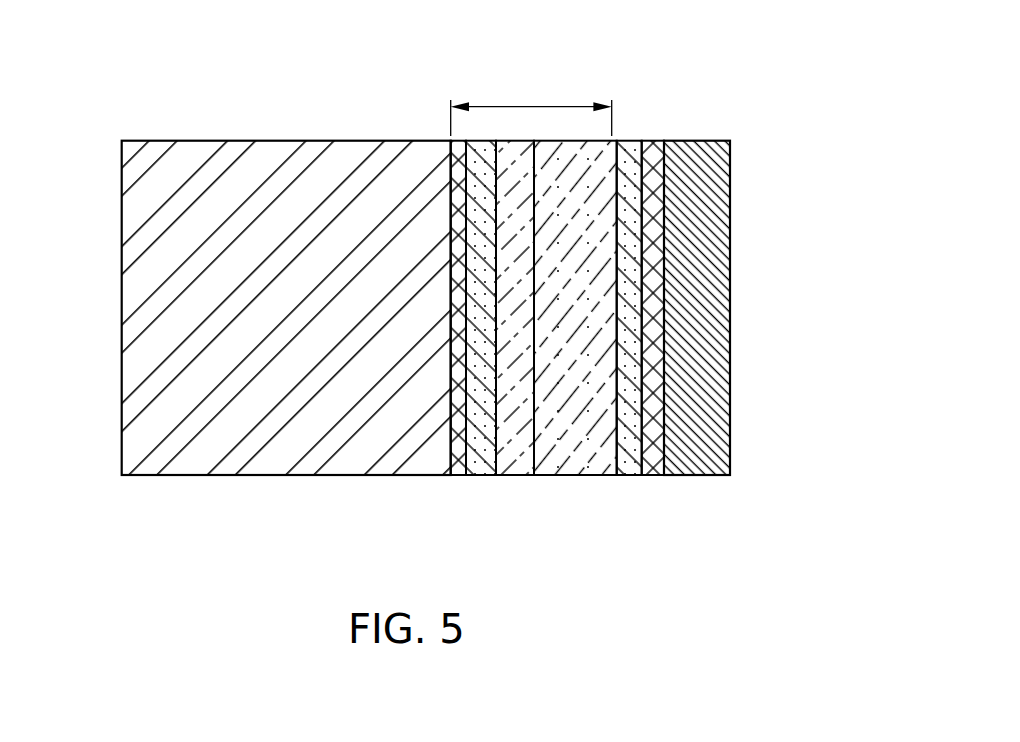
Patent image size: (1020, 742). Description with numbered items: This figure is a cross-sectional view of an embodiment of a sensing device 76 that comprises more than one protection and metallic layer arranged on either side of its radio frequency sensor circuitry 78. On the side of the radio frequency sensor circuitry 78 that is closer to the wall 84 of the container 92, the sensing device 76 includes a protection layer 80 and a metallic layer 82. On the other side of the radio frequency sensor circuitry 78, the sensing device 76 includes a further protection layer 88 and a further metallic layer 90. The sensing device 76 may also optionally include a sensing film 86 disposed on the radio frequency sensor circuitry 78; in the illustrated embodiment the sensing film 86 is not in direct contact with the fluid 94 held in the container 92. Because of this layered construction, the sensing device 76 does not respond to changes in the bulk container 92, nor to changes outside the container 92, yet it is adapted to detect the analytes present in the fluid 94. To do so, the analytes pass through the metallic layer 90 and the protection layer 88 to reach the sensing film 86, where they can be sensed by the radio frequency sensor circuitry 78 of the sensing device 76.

The sensing device 76 is at (535, 106).
The radio frequency sensor circuitry 78 is at (588, 475).
The protection layer 80 is at (630, 475).
The metallic layer 82 is at (653, 475).
The wall 84 is at (696, 140).
The sensing film 86 is at (520, 475).
The protection layer 88 is at (475, 475).
The metallic layer 90 is at (456, 475).
The container 92 is at (315, 475).
The fluid 94 is at (274, 163).